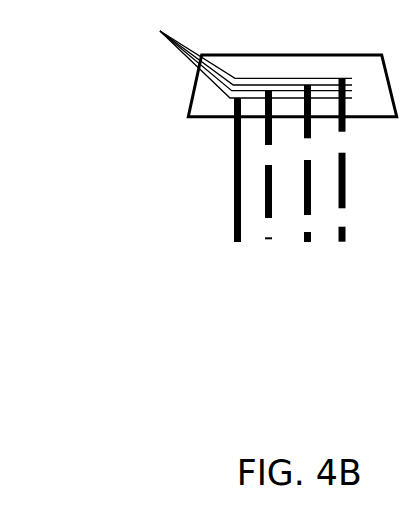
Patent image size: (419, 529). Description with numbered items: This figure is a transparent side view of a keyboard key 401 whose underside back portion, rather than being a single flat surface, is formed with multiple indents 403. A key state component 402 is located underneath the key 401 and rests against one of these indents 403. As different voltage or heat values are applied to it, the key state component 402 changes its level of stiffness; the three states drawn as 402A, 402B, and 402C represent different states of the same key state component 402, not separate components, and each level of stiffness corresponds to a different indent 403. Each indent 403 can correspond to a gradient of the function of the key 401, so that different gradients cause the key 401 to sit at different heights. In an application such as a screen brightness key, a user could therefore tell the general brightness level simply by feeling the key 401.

The key 401 is at (173, 109).
The key state component 402 is at (233, 245).
The key state component stiffness level 402A is at (272, 245).
The key state component stiffness level 402B is at (307, 245).
The key state component stiffness level 402C is at (343, 243).
The indents 403 is at (234, 54).